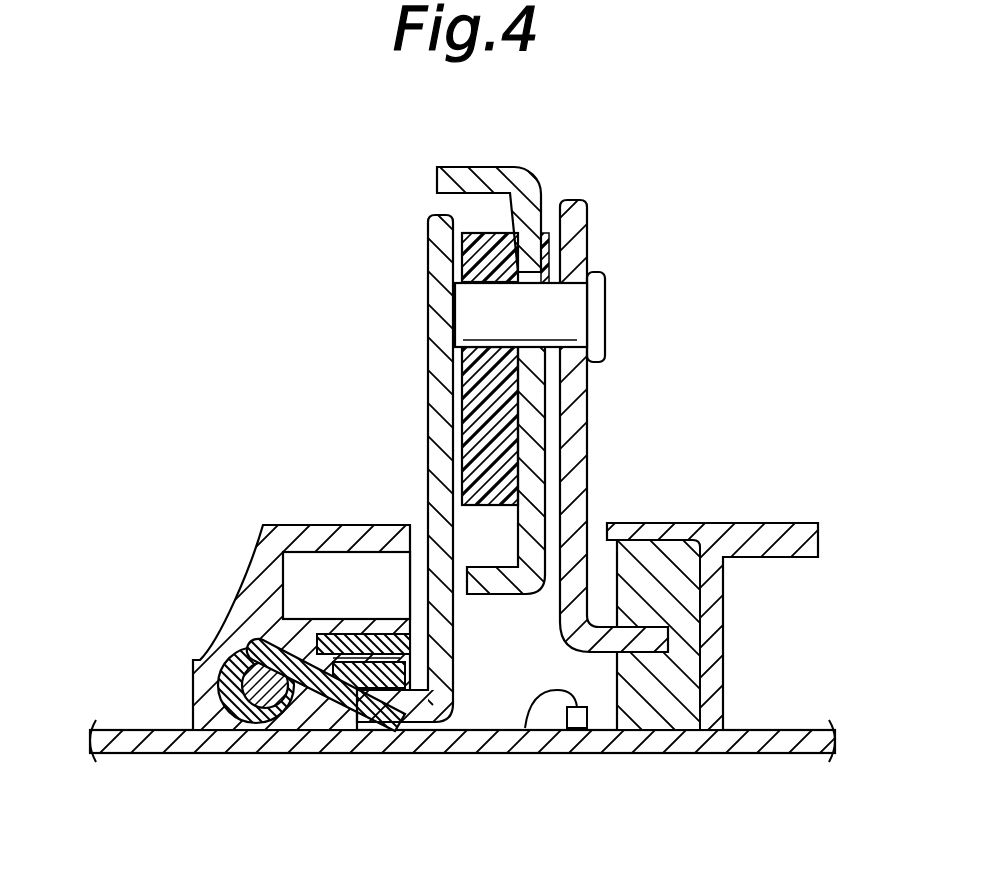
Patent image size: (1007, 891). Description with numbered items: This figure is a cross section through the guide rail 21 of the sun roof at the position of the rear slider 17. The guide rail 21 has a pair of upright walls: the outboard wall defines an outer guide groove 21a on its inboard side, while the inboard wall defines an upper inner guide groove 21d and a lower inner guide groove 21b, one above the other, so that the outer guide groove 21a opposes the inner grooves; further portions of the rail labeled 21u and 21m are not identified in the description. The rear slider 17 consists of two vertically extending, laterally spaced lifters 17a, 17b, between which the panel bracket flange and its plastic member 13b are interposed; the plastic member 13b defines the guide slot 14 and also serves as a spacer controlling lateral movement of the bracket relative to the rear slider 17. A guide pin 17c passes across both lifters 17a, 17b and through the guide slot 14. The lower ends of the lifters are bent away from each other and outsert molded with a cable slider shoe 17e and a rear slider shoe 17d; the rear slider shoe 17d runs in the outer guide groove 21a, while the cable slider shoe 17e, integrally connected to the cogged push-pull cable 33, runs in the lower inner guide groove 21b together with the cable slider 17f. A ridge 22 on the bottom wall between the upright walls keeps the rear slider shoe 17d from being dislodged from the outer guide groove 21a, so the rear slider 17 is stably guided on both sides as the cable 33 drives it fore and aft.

The plastic member 13b is at (493, 252).
The guide slot 14 is at (500, 289).
The rear slider 17 is at (503, 457).
The lifter 17a is at (428, 380).
The lifter 17b is at (587, 398).
The guide pin 17c is at (605, 332).
The rear slider shoe 17d is at (653, 560).
The cable slider shoe 17e is at (308, 714).
The cable slider 17f is at (225, 642).
The guide rail 21 is at (315, 521).
The outer guide groove 21a is at (608, 723).
The lower inner guide groove 21b is at (363, 755).
The upper inner guide groove 21d is at (300, 606).
The mounting portion of housing 21m is at (402, 635).
The upper portion of housing 21u is at (340, 533).
The ridge 22 is at (525, 728).
The push-pull cable 33 is at (243, 727).